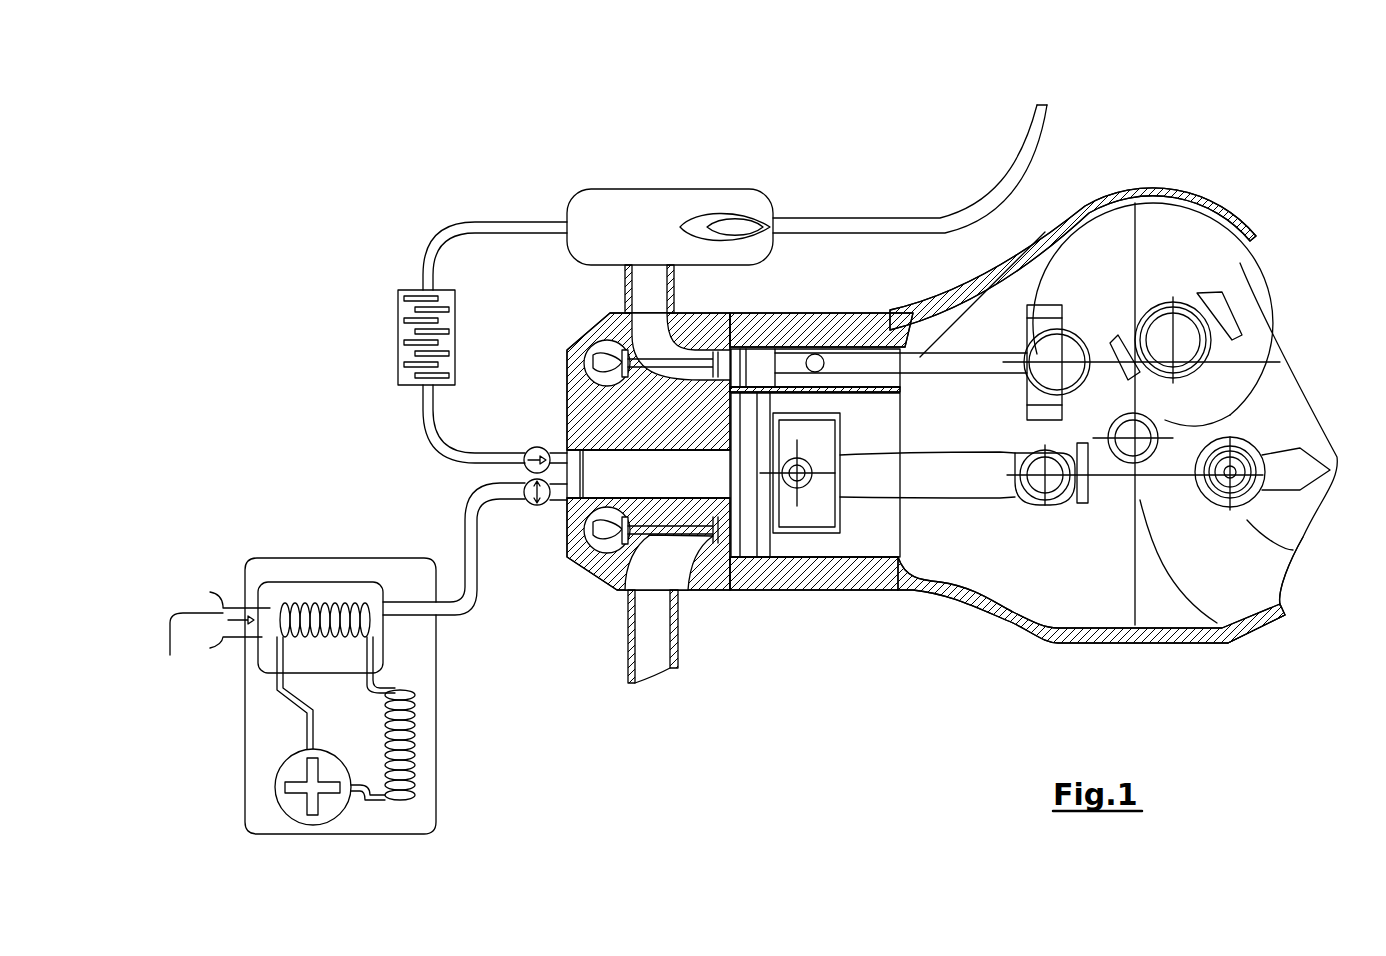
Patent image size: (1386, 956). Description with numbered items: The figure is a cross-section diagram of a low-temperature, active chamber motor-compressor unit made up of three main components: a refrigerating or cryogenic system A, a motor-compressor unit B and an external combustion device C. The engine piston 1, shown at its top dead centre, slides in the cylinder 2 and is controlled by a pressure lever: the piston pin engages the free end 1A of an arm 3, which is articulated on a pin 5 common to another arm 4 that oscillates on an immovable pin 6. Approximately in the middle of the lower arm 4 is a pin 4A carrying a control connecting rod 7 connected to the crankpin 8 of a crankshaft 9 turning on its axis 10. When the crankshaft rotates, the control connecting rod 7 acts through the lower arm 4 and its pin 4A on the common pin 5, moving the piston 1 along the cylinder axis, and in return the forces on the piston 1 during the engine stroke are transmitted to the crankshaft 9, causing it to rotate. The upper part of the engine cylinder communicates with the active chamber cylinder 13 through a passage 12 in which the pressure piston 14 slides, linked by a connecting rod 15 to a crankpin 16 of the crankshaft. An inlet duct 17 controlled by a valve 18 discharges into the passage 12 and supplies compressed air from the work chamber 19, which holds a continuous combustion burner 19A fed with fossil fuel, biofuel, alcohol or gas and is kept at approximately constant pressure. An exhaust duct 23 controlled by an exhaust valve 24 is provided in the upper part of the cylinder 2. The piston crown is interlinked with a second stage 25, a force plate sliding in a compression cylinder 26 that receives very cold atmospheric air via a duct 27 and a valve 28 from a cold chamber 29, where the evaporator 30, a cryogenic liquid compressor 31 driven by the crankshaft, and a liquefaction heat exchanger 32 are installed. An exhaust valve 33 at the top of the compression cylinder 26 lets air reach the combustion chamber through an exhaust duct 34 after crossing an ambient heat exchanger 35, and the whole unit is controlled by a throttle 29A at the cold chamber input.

The engine piston 1 is at (727, 503).
The free end of pressure lever 1A is at (797, 497).
The cylinder 2 is at (823, 577).
The arm 3 is at (927, 467).
The arm 4 is at (1093, 473).
The pin 4A is at (1230, 640).
The pin 5 is at (1043, 500).
The immovable pin 6 is at (1290, 552).
The control connecting rod 7 is at (1250, 435).
The crankpin 8 is at (1210, 297).
The crankshaft 9 is at (1163, 282).
The axis 10 is at (1165, 418).
The passage 12 is at (805, 352).
The active chamber cylinder 13 is at (897, 305).
The pressure piston 14 is at (813, 343).
The connecting rod 15 is at (965, 312).
The crankpin 16 is at (1058, 330).
The inlet duct 17 is at (653, 305).
The valve 18 is at (680, 313).
The work chamber 19 is at (690, 210).
The burner 19A is at (758, 232).
The exhaust duct 23 is at (657, 600).
The exhaust valve 24 is at (603, 575).
The second stage 25 is at (567, 410).
The compression cylinder 26 is at (640, 465).
The duct 27 is at (470, 530).
The valve 28 is at (520, 507).
The cold chamber 29 is at (250, 603).
The throttle 29A is at (230, 637).
The evaporator 30 is at (343, 600).
The cryogenic liquid compressor 31 is at (297, 777).
The liquefaction heat exchanger 32 is at (417, 770).
The exhaust valve 33 is at (527, 462).
The exhaust duct 34 is at (423, 413).
The ambient heat exchanger 35 is at (398, 360).
The refrigerating or cryogenic system A is at (435, 833).
The motor-compressor unit B is at (1157, 642).
The external combustion device C is at (580, 193).